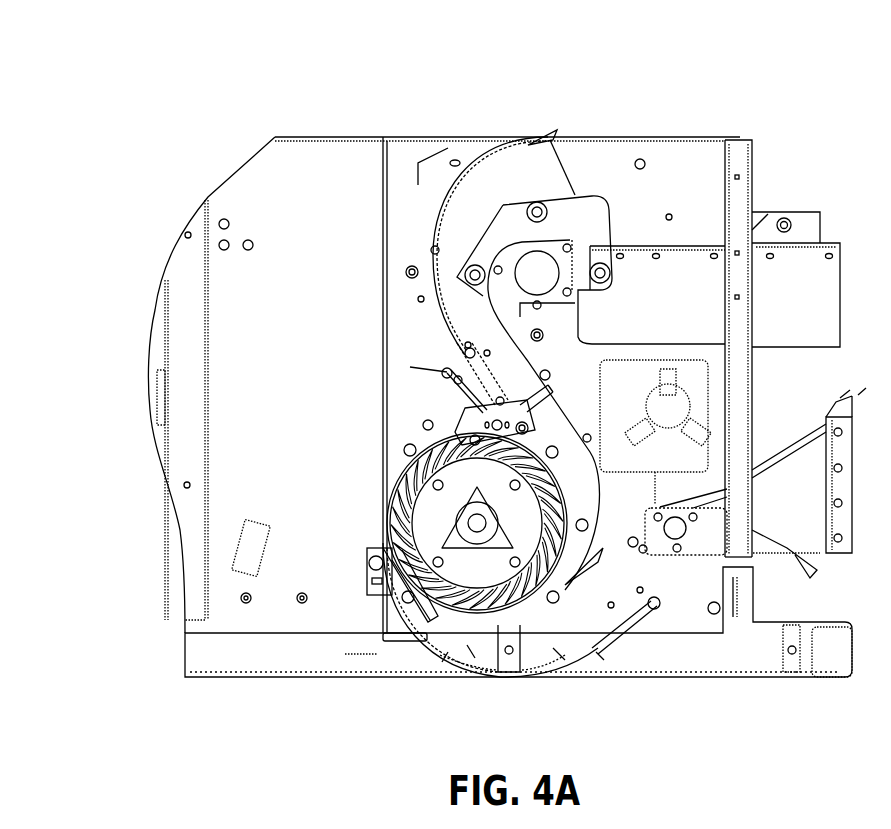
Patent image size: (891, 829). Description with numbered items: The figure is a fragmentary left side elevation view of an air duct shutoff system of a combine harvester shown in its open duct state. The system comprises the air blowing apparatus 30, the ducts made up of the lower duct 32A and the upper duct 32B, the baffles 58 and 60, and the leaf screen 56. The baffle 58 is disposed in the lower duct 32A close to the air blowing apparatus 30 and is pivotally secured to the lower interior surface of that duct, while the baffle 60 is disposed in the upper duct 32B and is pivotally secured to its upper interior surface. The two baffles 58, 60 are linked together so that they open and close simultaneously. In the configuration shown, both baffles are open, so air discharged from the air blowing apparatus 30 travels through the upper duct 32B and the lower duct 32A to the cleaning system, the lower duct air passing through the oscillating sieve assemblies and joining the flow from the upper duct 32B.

The air blowing apparatus 30 is at (398, 472).
The lower duct 32A is at (583, 657).
The upper duct 32B is at (487, 165).
The leaf screen 56 is at (354, 683).
The baffle 58 is at (615, 612).
The baffle 60 is at (497, 365).